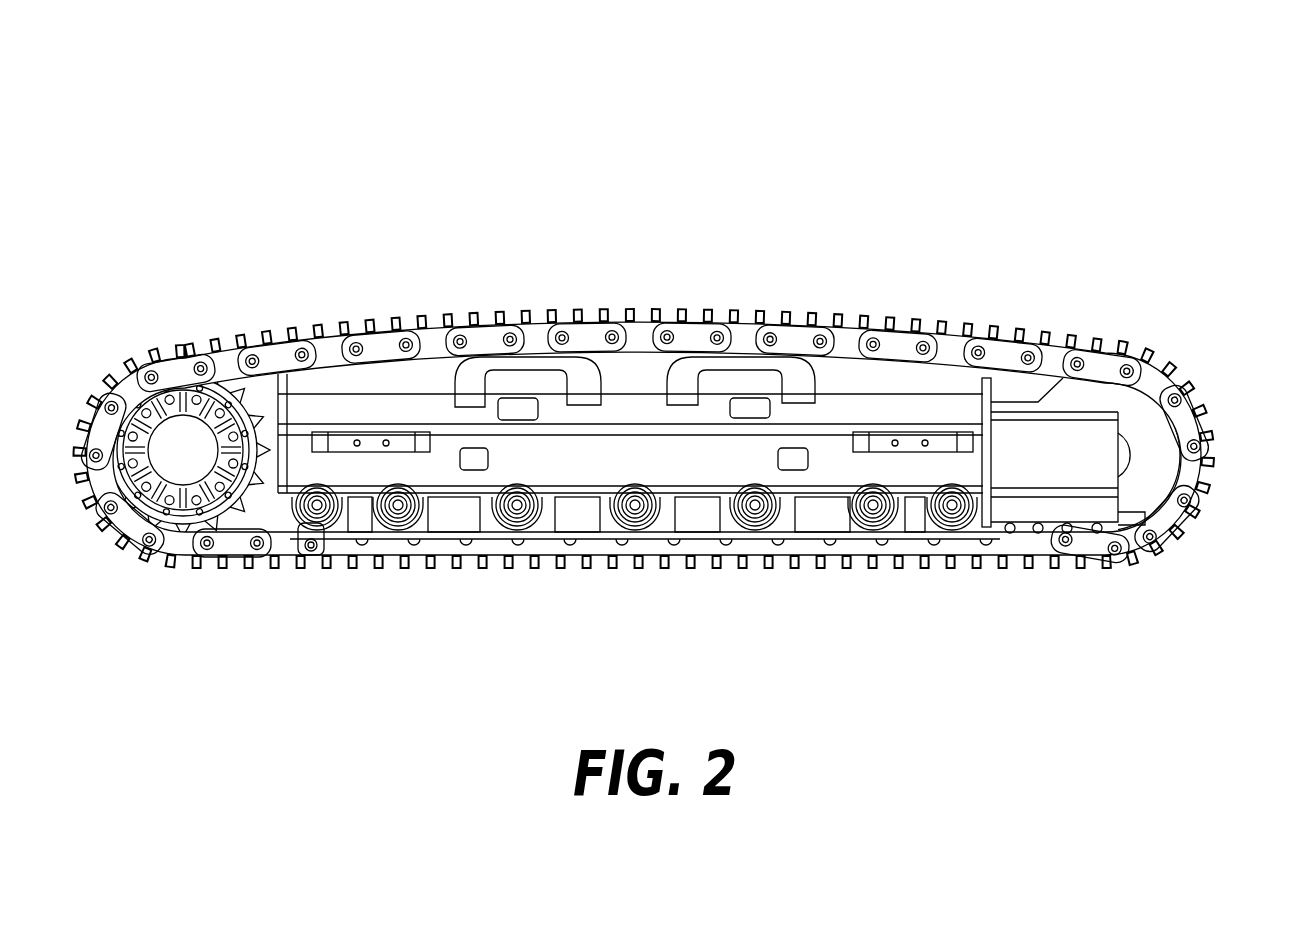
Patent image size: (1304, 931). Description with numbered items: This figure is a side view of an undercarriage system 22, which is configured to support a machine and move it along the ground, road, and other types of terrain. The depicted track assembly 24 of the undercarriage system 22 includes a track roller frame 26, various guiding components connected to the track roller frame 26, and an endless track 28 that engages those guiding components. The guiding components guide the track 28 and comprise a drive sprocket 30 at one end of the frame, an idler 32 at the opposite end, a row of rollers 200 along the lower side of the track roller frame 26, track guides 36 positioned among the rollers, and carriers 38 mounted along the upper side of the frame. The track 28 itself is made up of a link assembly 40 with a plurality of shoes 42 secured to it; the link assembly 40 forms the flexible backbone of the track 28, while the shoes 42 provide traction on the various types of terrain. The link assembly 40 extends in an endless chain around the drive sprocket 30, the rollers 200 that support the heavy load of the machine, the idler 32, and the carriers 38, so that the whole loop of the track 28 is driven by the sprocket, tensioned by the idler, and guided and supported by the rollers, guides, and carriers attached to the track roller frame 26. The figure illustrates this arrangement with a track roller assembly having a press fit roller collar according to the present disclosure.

The undercarriage system 22 is at (1064, 122).
The track assembly 24 is at (1024, 300).
The track roller frame 26 is at (542, 450).
The endless track 28 is at (592, 568).
The drive sprocket 30 is at (183, 450).
The idler 32 is at (1150, 467).
The track guides 36 is at (465, 520).
The carriers 38 is at (470, 385).
The link assembly 40 is at (178, 366).
The shoes 42 is at (1173, 372).
The rollers 200 is at (319, 512).